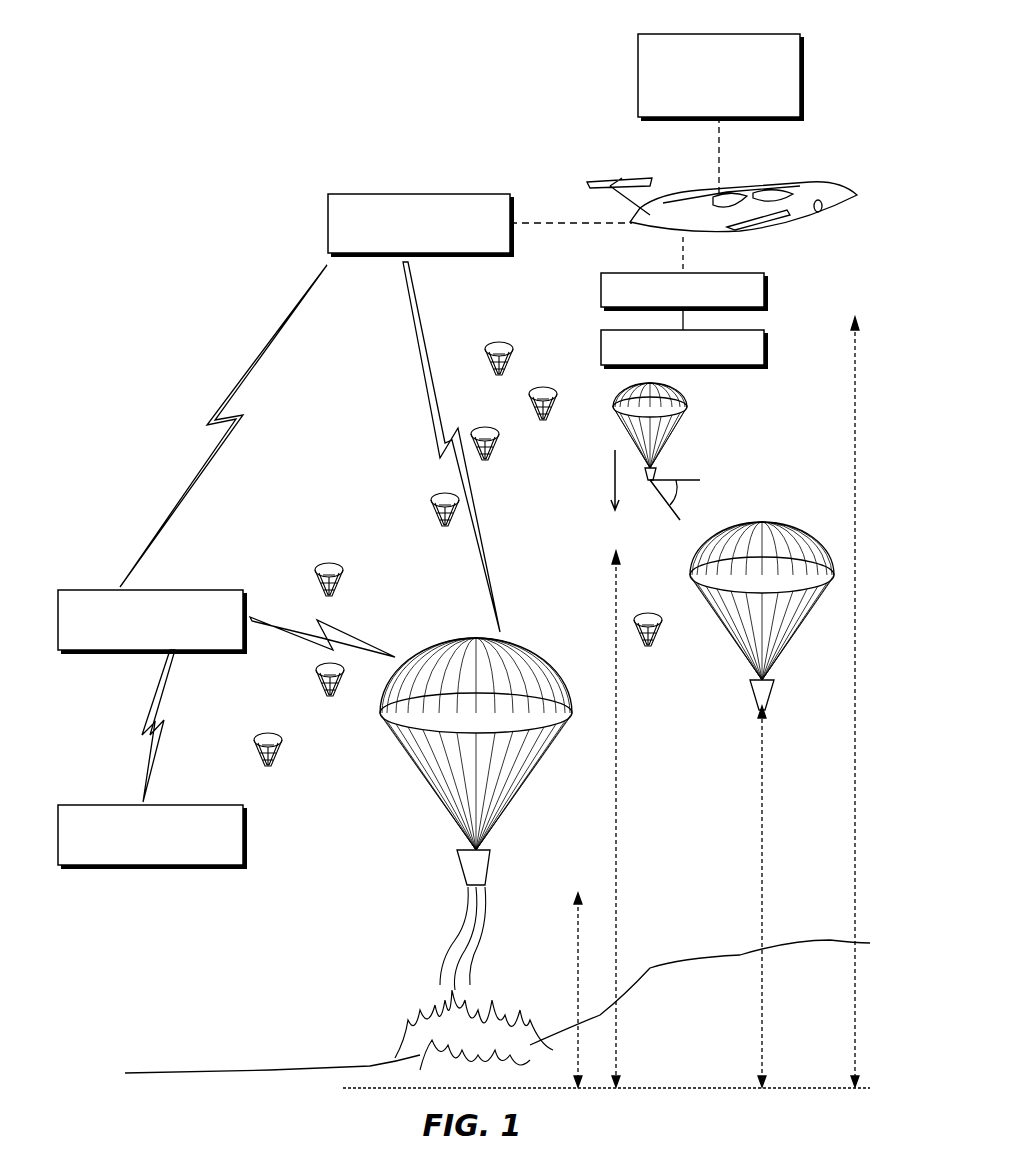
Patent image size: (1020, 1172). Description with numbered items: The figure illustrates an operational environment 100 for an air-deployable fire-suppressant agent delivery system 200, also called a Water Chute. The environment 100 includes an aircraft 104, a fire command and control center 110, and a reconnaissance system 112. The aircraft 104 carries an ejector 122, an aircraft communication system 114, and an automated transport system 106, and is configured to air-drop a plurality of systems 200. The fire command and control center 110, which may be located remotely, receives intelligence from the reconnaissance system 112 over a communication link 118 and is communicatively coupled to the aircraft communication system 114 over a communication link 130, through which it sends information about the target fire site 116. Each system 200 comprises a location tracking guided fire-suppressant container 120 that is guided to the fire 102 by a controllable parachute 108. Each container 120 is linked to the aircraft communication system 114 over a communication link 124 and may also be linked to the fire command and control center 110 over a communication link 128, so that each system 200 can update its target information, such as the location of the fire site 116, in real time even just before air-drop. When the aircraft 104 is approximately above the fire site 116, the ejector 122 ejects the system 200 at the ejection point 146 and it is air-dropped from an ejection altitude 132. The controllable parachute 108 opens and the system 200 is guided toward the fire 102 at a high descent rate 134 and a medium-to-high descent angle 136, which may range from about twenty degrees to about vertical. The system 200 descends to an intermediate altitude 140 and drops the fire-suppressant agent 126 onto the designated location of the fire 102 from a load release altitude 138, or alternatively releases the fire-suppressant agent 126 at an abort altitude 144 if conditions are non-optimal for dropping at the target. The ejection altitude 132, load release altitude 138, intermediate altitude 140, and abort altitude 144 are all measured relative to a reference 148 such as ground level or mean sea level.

The operational environment 100 is at (191, 106).
The fire 102 is at (522, 1015).
The aircraft 104 is at (790, 185).
The automated transport system 106 is at (636, 48).
The controllable parachute 108 is at (775, 525).
The fire command and control center 110 is at (90, 589).
The reconnaissance system 112 is at (88, 804).
The aircraft communication system 114 is at (327, 212).
The fire site 116 is at (708, 958).
The communication link 118 is at (138, 722).
The location tracking guided fire-suppressant container 120 is at (760, 712).
The ejector 122 is at (600, 287).
The communication link 124 is at (430, 428).
The fire-suppressant agent 126 is at (462, 935).
The communication link 128 is at (360, 640).
The communication link 130 is at (200, 455).
The ejection altitude 132 is at (852, 440).
The high descent rate 134 is at (610, 480).
The descent angle 136 is at (688, 495).
The load release altitude 138 is at (574, 930).
The intermediate altitude 140 is at (760, 832).
The abort altitude 144 is at (613, 578).
The ejection point 146 is at (600, 345).
The reference 148 is at (662, 1087).
The air-deployable fire-suppressant agent delivery system 200 is at (427, 829).